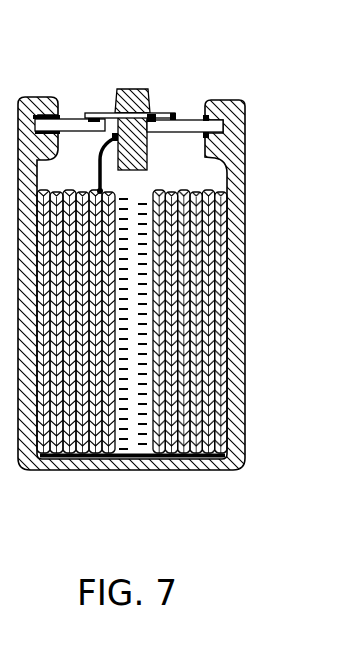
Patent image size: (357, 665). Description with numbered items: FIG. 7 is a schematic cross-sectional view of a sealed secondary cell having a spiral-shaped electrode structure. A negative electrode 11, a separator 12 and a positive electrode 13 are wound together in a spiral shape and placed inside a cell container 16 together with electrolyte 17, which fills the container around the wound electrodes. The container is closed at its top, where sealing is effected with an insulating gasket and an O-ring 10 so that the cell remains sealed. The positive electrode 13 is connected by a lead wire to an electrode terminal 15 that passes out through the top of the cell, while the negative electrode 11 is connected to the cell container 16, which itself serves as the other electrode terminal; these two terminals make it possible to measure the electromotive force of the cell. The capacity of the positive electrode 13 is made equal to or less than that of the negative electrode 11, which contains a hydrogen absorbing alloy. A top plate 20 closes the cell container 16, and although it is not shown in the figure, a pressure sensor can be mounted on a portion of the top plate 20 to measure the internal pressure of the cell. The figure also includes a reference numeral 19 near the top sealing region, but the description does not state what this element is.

The O-ring 10 is at (180, 117).
The negative electrode 11 is at (245, 212).
The separator 12 is at (213, 250).
The positive electrode 13 is at (205, 285).
The electrode terminal 15 is at (132, 133).
The cell container 16 is at (235, 335).
The electrolyte 17 is at (133, 460).
The gasket 19 is at (205, 113).
The top plate 20 is at (72, 116).